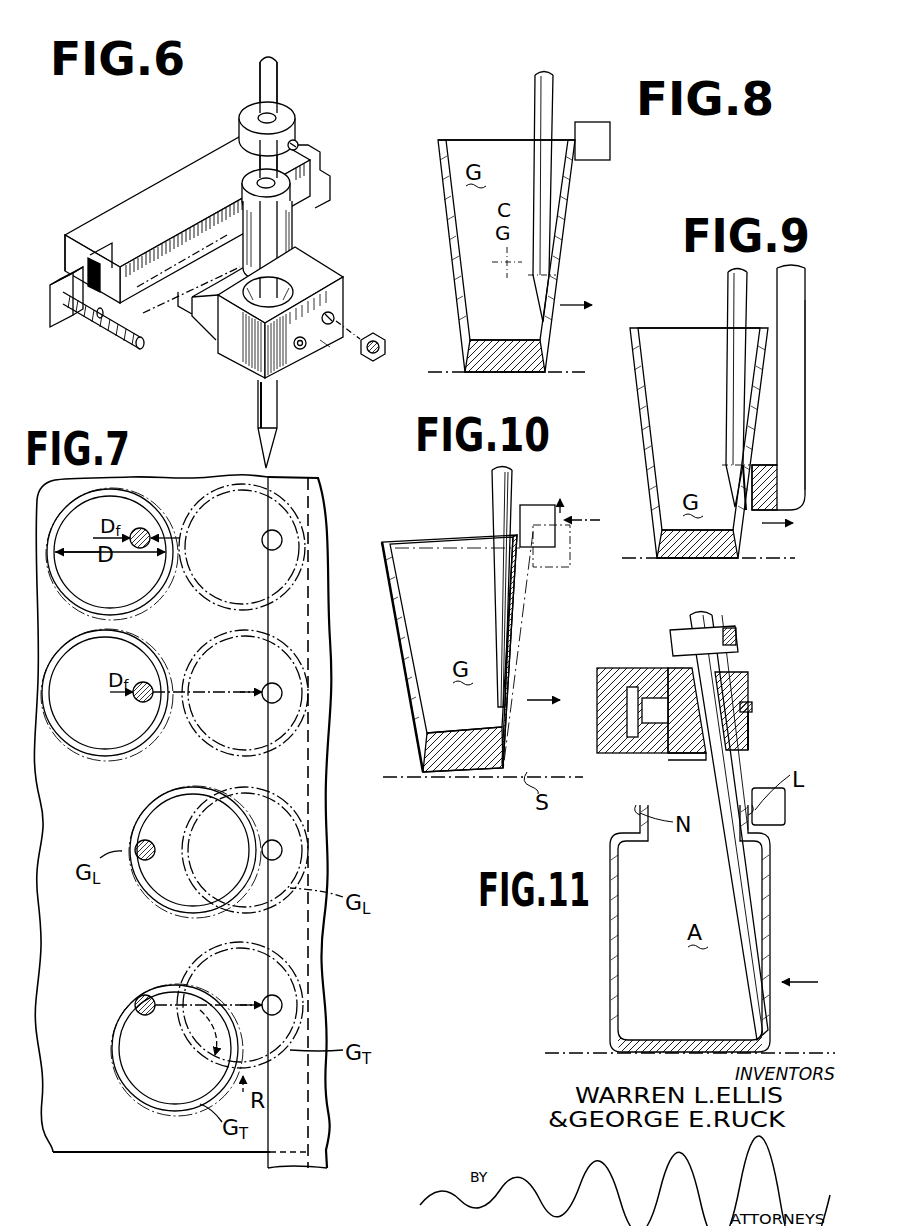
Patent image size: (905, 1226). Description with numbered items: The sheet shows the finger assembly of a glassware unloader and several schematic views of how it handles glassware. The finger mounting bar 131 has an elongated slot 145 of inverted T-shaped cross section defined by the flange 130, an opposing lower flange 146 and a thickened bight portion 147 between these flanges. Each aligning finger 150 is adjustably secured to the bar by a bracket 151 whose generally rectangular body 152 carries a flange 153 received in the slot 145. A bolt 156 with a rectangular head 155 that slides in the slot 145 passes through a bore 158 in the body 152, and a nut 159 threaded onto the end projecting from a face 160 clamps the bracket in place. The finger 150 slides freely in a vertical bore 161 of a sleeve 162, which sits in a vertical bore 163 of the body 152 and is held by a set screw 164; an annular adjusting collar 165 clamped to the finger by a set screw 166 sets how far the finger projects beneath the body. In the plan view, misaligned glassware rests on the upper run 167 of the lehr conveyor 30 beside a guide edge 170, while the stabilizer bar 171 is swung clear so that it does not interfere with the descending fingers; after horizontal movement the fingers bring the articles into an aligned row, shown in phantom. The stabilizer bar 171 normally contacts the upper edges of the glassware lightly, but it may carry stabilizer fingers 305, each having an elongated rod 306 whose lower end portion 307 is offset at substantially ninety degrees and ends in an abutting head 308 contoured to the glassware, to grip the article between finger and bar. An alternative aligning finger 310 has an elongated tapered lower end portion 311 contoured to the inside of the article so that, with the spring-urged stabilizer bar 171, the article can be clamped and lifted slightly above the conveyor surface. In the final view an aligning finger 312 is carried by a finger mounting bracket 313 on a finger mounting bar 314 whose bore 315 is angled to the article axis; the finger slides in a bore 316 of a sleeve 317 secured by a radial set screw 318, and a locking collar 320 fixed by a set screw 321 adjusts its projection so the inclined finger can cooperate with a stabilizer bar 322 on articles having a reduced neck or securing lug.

In FIG. 7, the lehr conveyor 30 is at (116, 1152).
In FIG. 6, the flange 130 is at (105, 256).
In FIG. 6, the finger mounting bar 131 is at (152, 182).
In FIG. 6, the slot 145 is at (248, 460).
In FIG. 6, the threaded portion 146 is at (100, 333).
In FIG. 6, the thickened bight portion 147 is at (65, 248).
In FIG. 6, the aligning finger 150 is at (272, 420).
In FIG. 9, the aligning finger 150 is at (736, 354).
In FIG. 6, the bracket 151 is at (247, 355).
In FIG. 6, the body 152 is at (233, 328).
In FIG. 6, the flange 153 is at (203, 302).
In FIG. 6, the rectangular head 155 is at (62, 325).
In FIG. 6, the bolt 156 is at (132, 333).
In FIG. 6, the bore 158 is at (334, 316).
In FIG. 6, the nut 159 is at (380, 336).
In FIG. 6, the face 160 is at (318, 343).
In FIG. 6, the vertical bore 161 is at (245, 186).
In FIG. 6, the sleeve 162 is at (290, 250).
In FIG. 6, the vertical bore 163 is at (293, 296).
In FIG. 6, the set screw 164 is at (298, 349).
In FIG. 6, the adjusting collar 165 is at (285, 122).
In FIG. 6, the set screw 166 is at (298, 145).
In FIG. 7, the upper run 167 is at (172, 1140).
In FIG. 7, the guide strip 170 is at (330, 1116).
In FIG. 7, the stabilizer bar 171 is at (312, 750).
In FIG. 8, the stabilizer bar 171 is at (590, 158).
In FIG. 10, the stabilizer bar 171 is at (548, 532).
In FIG. 9, the stabilizer finger 305 is at (792, 343).
In FIG. 9, the rod 306 is at (792, 392).
In FIG. 9, the lower end portion 307 is at (772, 485).
In FIG. 9, the abutting head 308 is at (749, 512).
In FIG. 10, the aligning finger 310 is at (512, 493).
In FIG. 10, the tapered lower end portion 311 is at (498, 582).
In FIG. 11, the aligning finger 312 is at (734, 770).
In FIG. 11, the finger mounting bracket 313 is at (749, 678).
In FIG. 11, the finger mounting bar 314 is at (621, 673).
In FIG. 11, the bore 315 is at (693, 740).
In FIG. 11, the bore 316 is at (720, 670).
In FIG. 11, the sleeve 317 is at (749, 730).
In FIG. 11, the set screw 318 is at (753, 705).
In FIG. 11, the locking collar 320 is at (681, 635).
In FIG. 11, the set screw 321 is at (738, 632).
In FIG. 11, the stabilizer bar 322 is at (788, 810).